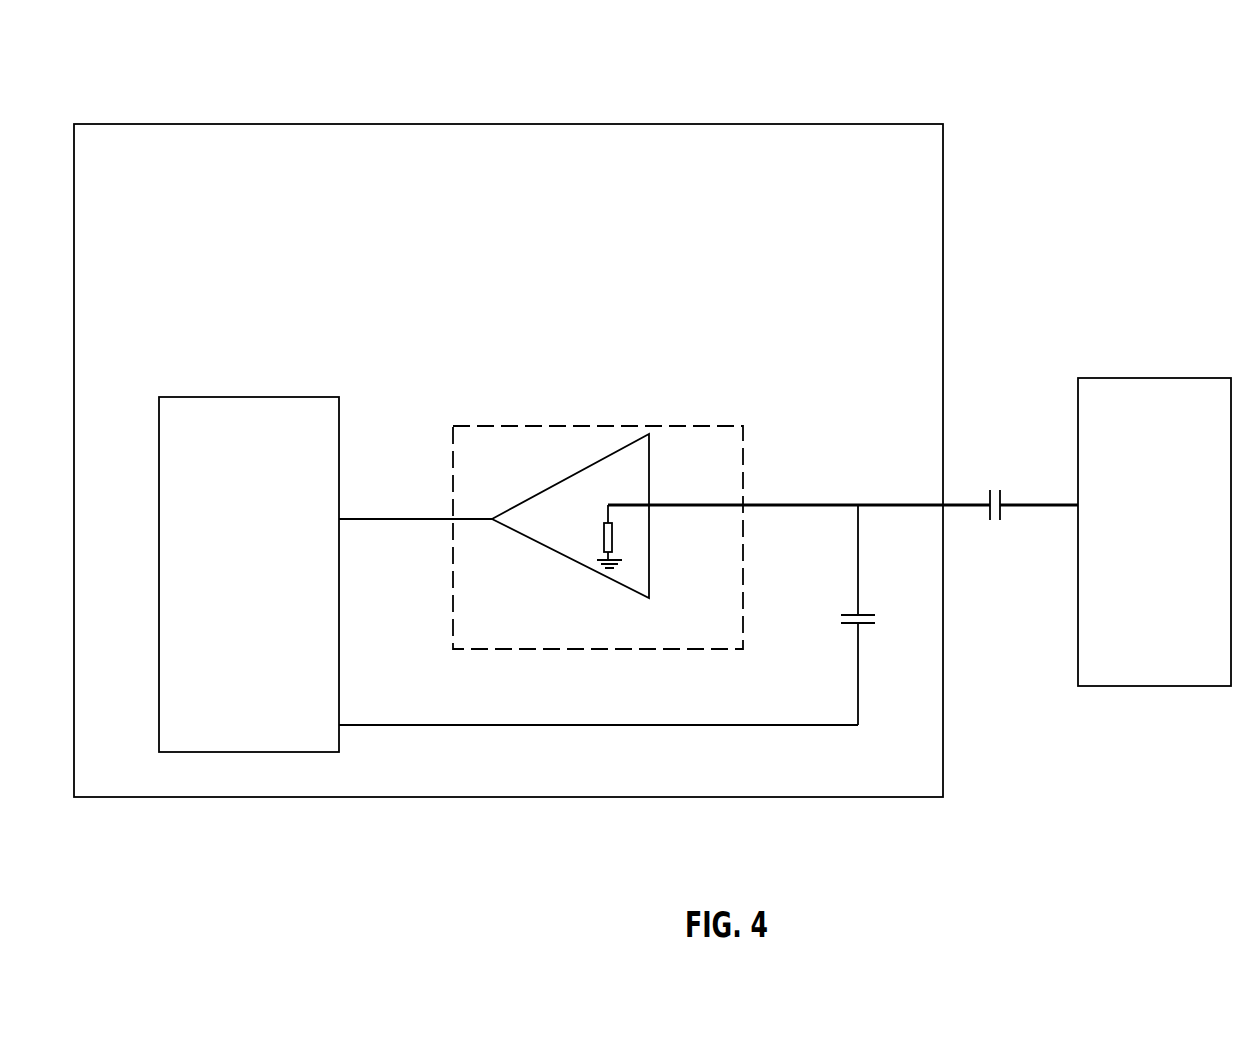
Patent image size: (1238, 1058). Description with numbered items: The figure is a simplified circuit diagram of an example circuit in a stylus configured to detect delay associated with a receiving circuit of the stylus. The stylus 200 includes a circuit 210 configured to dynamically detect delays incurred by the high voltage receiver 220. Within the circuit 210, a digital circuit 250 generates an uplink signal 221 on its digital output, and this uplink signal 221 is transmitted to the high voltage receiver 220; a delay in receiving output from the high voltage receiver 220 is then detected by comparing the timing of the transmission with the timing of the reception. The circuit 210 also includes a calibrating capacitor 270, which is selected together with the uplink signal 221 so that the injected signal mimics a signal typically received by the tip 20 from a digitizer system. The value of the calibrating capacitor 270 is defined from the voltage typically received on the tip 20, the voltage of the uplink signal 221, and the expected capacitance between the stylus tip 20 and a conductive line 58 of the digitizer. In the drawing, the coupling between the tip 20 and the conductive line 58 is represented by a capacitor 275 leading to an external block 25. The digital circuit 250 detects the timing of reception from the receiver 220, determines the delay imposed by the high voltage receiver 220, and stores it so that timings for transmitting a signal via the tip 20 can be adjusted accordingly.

The stylus 200 is at (270, 124).
The circuit 210 is at (340, 268).
The digital circuit 250 is at (283, 397).
The high voltage receiver 220 is at (587, 649).
The uplink signal 221 is at (390, 725).
The tip 20 is at (830, 505).
The calibrating capacitor 270 is at (862, 625).
The coupling capacitor 275 is at (1003, 520).
The conductive line 58 is at (1065, 505).
The sensed object 25 is at (1187, 378).